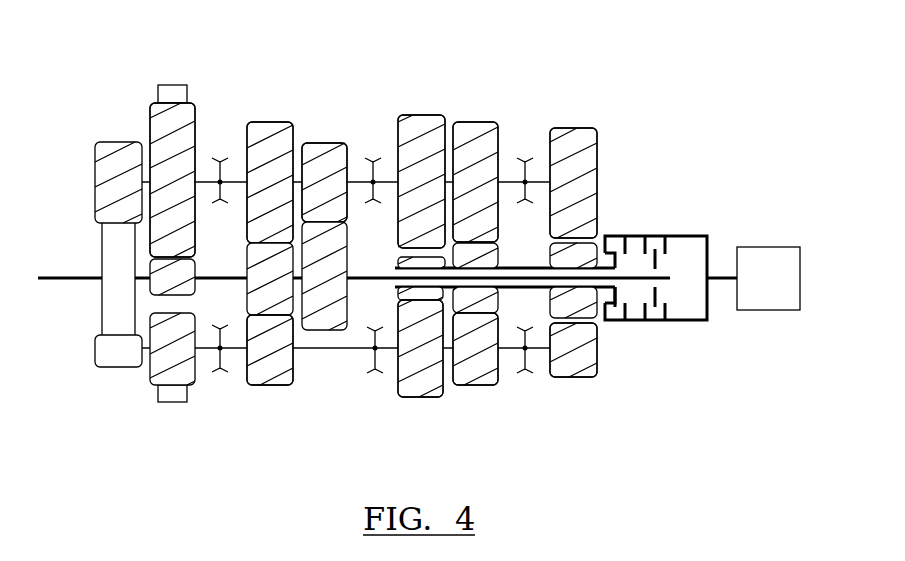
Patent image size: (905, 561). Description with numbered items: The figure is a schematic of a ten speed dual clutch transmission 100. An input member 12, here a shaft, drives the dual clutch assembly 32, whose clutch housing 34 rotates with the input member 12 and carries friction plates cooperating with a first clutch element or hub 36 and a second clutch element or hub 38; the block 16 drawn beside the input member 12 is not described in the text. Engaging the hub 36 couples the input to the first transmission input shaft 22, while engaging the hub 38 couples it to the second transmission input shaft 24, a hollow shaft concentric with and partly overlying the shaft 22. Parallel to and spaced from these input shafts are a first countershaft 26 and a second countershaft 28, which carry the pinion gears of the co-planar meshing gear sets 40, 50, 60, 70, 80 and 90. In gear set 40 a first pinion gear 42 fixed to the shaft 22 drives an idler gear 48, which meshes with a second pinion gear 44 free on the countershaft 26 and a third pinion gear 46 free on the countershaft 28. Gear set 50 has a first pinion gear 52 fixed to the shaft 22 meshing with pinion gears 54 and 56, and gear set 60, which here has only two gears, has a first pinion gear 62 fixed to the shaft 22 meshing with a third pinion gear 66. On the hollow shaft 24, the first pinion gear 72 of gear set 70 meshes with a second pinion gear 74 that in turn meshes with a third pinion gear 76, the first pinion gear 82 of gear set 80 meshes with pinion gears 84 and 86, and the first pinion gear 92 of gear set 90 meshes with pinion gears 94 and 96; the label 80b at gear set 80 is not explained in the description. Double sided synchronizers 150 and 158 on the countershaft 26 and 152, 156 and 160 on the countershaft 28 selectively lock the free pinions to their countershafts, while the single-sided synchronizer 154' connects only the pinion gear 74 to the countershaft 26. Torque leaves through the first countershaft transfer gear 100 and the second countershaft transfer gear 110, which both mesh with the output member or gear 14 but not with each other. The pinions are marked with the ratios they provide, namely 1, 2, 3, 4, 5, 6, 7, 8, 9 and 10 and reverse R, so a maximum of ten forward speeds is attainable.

The ten speed dual clutch transmission 100 is at (720, 64).
The second countershaft transfer gear 110 is at (118, 182).
The output member 14 is at (354, 279).
The idler gear 48 is at (158, 93).
The first gear ratio 1 is at (172, 180).
The third pinion gear 46 is at (172, 180).
The first pinion gear 42 is at (172, 277).
The third gear ratio 3 is at (172, 349).
The co-planar gear set 40 is at (170, 417).
The second pinion gear 44 is at (196, 323).
The synchronizer 152 is at (220, 158).
The synchronizer 150 is at (217, 375).
The fifth gear ratio 5 is at (270, 182).
The third pinion gear 56 is at (270, 182).
The first pinion gear 52 is at (270, 279).
The seventh gear ratio 7 is at (274, 395).
The co-planar gear set 50 is at (256, 407).
The second pinion gear 54 is at (275, 386).
The co-planar gear set 60 is at (317, 121).
The third pinion gear 66 is at (340, 141).
The ninth gear ratio 9 is at (333, 151).
The first pinion gear 62 is at (348, 316).
The synchronizer 156 is at (373, 158).
The single-sided synchronizer 154' is at (358, 376).
The co-planar gear set 70 is at (412, 95).
The third pinion gear 76 is at (430, 115).
The reverse gear ratio R is at (427, 149).
The first pinion gear 72 is at (397, 262).
The second gear ratio 2 is at (417, 388).
The second pinion gear 74 is at (422, 397).
The co-planar gear set 80 is at (488, 97).
The gear set portion 80b is at (466, 402).
The fourth gear ratio 4 is at (475, 182).
The third pinion gear 86 is at (475, 182).
The first pinion gear 82 is at (475, 255).
The second pinion gear 84 is at (482, 381).
The sixth gear ratio 6 is at (475, 349).
The synchronizer 160 is at (525, 158).
The synchronizer 158 is at (524, 375).
The second countershaft 28 is at (538, 181).
The second transmission input shaft 24 is at (537, 266).
The first countershaft 26 is at (333, 349).
The co-planar gear set 90 is at (576, 400).
The eighth gear ratio 8 is at (608, 223).
The third pinion gear 96 is at (598, 158).
The tenth gear ratio 10 is at (603, 364).
The second pinion gear 94 is at (594, 372).
The dual clutch assembly 32 is at (692, 211).
The first pinion gear 92 is at (615, 235).
The clutch housing 34 is at (640, 235).
The first transmission input shaft 22 is at (667, 277).
The second clutch element 38 is at (632, 308).
The first clutch element 36 is at (665, 308).
The input member 12 is at (722, 283).
The engine 16 is at (768, 278).